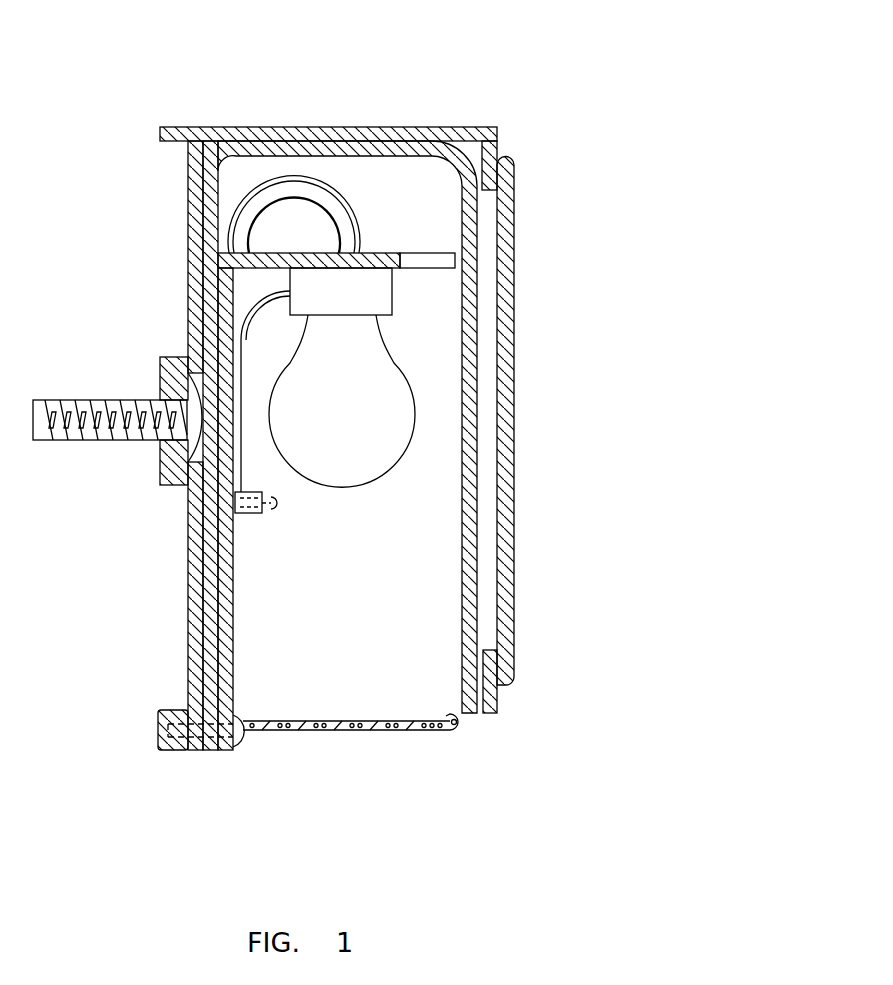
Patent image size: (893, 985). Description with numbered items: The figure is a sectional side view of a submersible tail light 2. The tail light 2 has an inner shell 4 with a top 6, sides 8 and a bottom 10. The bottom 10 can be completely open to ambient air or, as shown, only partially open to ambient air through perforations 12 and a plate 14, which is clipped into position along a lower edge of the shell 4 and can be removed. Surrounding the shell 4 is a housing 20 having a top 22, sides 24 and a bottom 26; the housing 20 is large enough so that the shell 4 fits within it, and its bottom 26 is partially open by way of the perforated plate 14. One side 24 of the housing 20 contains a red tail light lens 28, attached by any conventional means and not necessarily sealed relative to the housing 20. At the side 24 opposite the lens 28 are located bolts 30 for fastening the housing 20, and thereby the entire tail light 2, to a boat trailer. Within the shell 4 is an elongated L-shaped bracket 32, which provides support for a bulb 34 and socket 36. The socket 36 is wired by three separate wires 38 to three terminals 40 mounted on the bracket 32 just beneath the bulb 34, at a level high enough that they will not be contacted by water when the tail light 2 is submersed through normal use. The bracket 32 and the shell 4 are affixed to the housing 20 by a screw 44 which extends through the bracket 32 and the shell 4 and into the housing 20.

The submersible tail light 2 is at (463, 83).
The inner shell 4 is at (253, 147).
The top 6 is at (330, 145).
The sides 8 is at (470, 413).
The bottom 10 is at (423, 700).
The perforations 12 is at (275, 722).
The plate 14 is at (345, 730).
The housing 20 is at (195, 190).
The top 22 is at (383, 137).
The sides 24 is at (488, 144).
The bottom 26 is at (492, 700).
The red tail light lens 28 is at (505, 340).
The bolts 30 is at (82, 403).
The elongated L-shaped bracket 32 is at (222, 650).
The bulb 34 is at (368, 456).
The socket 36 is at (368, 289).
The wires 38 is at (293, 222).
The terminals 40 is at (272, 510).
The screw 44 is at (237, 728).